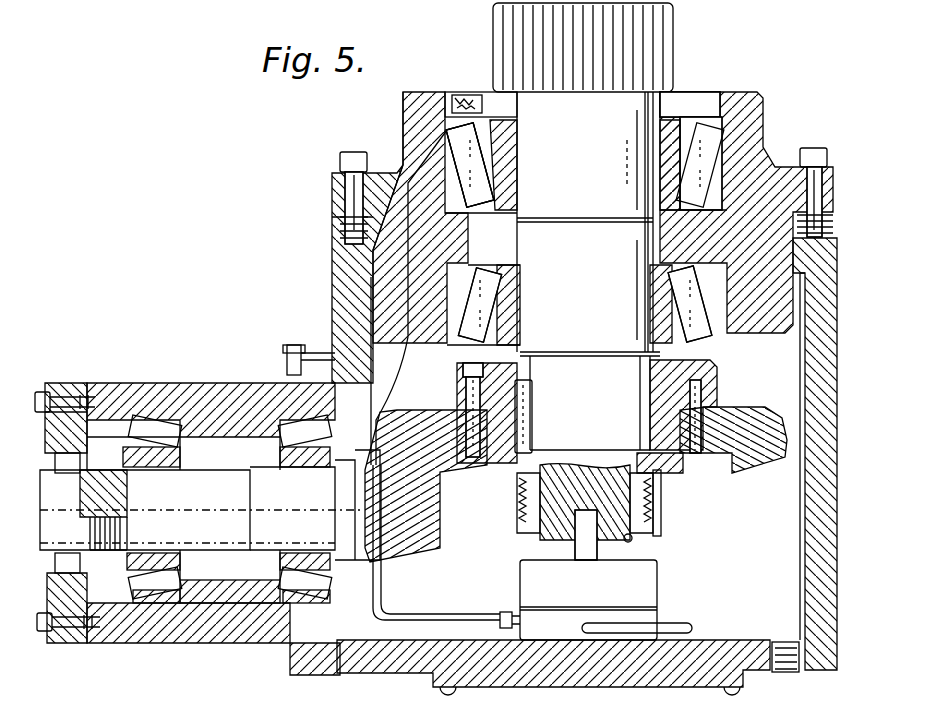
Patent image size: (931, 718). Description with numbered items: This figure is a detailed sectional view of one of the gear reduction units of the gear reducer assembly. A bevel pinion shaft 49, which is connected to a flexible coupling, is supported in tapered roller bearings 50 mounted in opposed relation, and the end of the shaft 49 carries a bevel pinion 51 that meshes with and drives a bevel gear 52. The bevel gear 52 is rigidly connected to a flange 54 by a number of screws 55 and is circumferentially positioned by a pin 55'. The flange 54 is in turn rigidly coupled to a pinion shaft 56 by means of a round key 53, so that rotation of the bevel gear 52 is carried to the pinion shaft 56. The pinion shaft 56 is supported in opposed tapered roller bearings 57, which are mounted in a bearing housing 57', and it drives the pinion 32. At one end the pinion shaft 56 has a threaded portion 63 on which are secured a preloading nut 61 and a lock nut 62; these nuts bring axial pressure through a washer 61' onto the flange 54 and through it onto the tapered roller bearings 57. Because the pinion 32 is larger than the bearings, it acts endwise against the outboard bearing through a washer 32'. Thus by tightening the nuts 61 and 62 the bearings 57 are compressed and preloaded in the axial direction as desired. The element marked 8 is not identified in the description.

The pinion 32 is at (607, 47).
The washer 32' is at (693, 88).
The tapered roller bearings 57 is at (628, 222).
The bearing housing 57' is at (414, 153).
The pinion shaft 56 is at (585, 222).
The round key 53 is at (534, 400).
The flange 54 is at (688, 373).
The screws 55 is at (475, 435).
The pin 55' is at (729, 414).
The bevel gear 52 is at (762, 462).
The preloading nut 61 is at (611, 503).
The washer 61' is at (673, 501).
The lock nut 62 is at (660, 527).
The threaded portion 63 is at (630, 540).
The key 8 is at (586, 535).
The bevel pinion 51 is at (422, 525).
The tapered roller bearings 50 is at (280, 567).
The bevel pinion shaft 49 is at (210, 505).